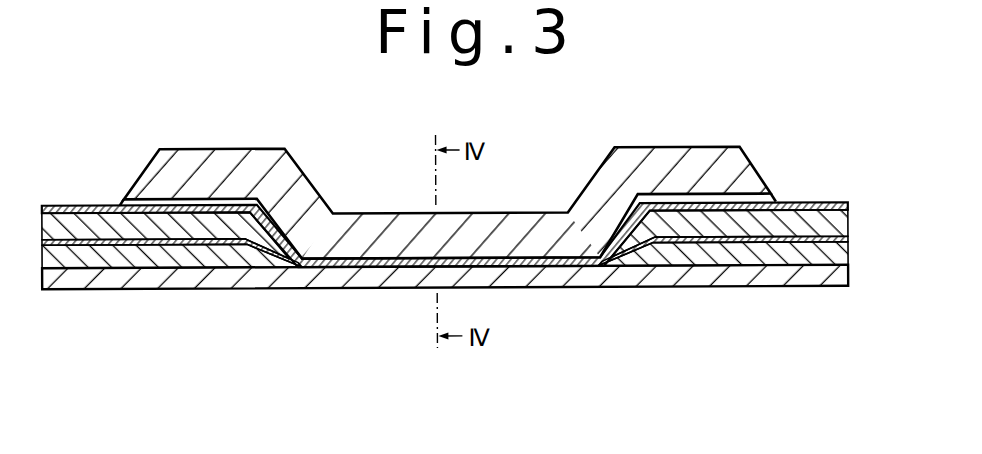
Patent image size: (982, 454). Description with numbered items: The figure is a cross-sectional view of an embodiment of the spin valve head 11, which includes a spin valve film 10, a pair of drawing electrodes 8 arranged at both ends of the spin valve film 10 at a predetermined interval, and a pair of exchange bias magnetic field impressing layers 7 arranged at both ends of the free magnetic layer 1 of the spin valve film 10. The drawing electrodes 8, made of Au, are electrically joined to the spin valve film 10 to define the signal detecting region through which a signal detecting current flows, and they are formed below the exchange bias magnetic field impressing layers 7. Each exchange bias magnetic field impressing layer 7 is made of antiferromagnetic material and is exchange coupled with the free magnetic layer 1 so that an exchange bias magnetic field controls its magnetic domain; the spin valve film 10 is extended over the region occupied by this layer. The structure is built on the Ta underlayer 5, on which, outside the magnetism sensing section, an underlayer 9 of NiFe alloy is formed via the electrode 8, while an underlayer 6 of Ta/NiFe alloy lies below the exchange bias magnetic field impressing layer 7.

The free magnetic layer 1 is at (775, 196).
The underlayer 5 is at (843, 276).
The underlayer 6 is at (853, 238).
The exchange bias magnetic field impressing layer 7 is at (829, 218).
The drawing electrode 8 is at (852, 256).
The underlayer 9 is at (803, 204).
The spin valve film 10 is at (382, 228).
The spin valve head 11 is at (151, 136).